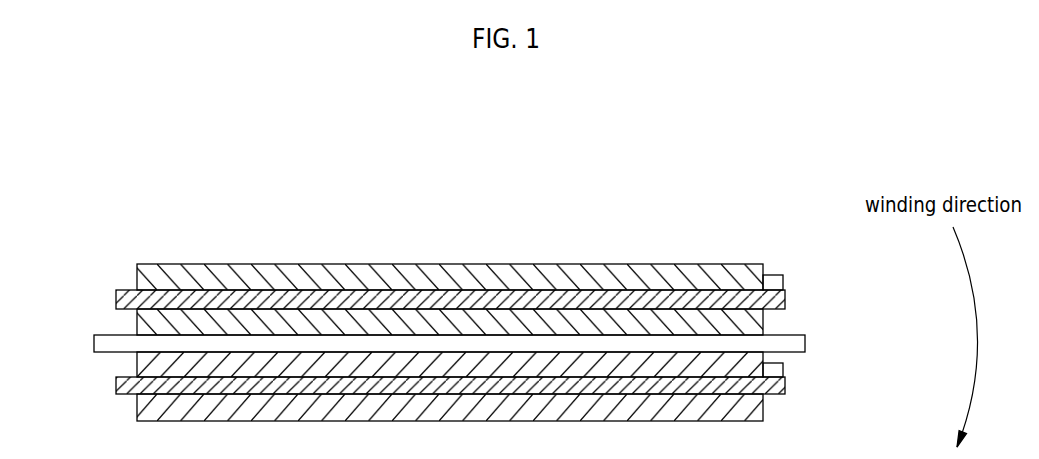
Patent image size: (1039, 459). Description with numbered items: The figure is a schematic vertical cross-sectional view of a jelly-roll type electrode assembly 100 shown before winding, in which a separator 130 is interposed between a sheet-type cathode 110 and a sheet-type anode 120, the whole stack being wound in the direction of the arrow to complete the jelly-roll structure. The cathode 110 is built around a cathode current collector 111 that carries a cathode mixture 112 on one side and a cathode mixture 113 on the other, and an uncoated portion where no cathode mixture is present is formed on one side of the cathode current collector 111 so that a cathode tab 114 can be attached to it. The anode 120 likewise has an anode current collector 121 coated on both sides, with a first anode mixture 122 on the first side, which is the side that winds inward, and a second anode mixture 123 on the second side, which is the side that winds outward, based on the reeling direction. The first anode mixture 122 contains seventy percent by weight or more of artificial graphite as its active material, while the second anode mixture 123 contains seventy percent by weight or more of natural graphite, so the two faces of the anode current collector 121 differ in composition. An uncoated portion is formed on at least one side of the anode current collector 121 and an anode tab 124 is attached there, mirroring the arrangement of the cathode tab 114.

The jelly-roll type electrode assembly 100 is at (462, 175).
The cathode 110 is at (885, 357).
The cathode current collector 111 is at (786, 388).
The cathode mixture 112 is at (137, 406).
The cathode mixture 113 is at (137, 369).
The cathode tab 114 is at (784, 370).
The anode 120 is at (885, 253).
The anode current collector 121 is at (786, 296).
The first anode mixture 122 is at (137, 328).
The second anode mixture 123 is at (137, 280).
The anode tab 124 is at (785, 277).
The separator 130 is at (806, 340).